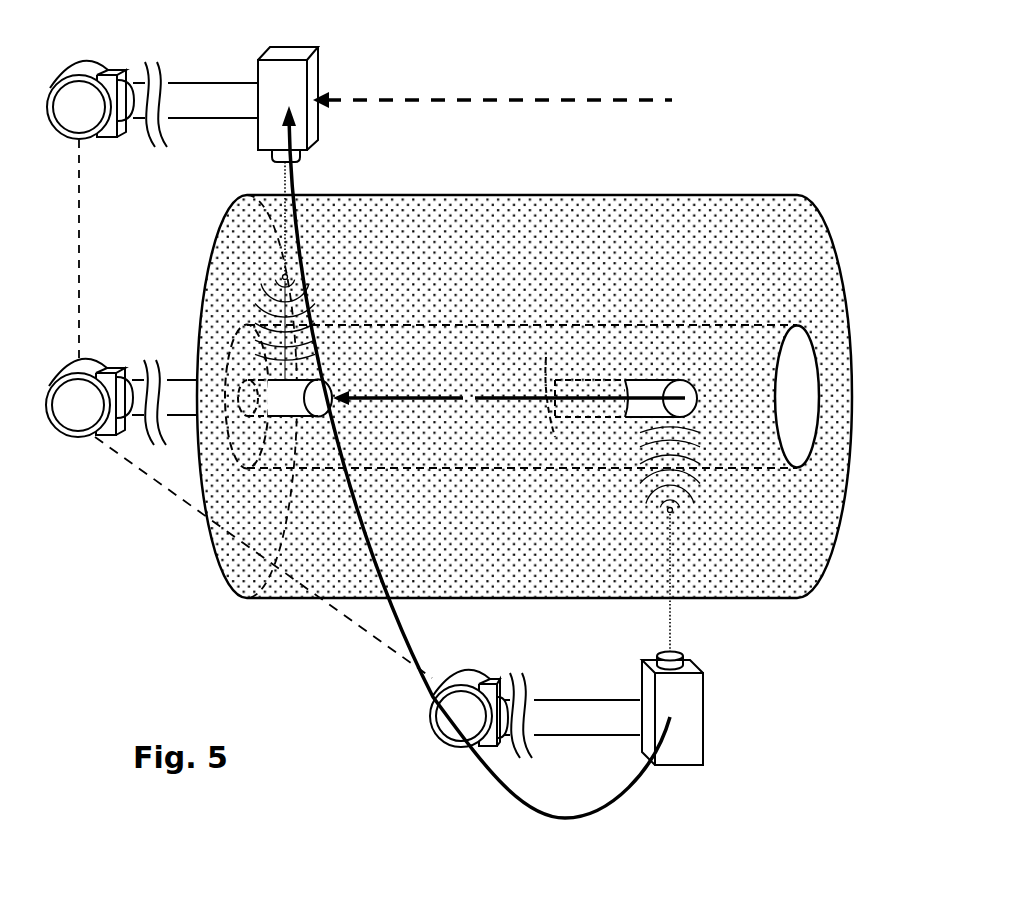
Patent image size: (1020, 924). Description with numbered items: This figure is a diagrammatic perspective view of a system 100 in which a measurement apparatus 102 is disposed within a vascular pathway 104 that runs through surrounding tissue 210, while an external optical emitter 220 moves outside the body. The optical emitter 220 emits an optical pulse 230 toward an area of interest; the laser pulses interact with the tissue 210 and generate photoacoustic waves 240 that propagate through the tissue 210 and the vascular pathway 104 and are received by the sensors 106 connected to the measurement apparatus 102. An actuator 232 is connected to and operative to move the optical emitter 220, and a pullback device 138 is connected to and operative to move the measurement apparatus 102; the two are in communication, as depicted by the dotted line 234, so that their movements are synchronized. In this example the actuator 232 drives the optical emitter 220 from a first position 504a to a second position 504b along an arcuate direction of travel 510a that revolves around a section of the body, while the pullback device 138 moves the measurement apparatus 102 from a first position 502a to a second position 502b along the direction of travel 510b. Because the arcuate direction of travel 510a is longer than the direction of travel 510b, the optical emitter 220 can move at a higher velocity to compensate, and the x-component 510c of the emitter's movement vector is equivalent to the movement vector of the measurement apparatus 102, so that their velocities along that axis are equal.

The system 100 is at (860, 170).
The measurement apparatus 102 is at (238, 438).
The vascular pathway 104 is at (822, 373).
The sensors 106 is at (333, 418).
The pullback device 138 is at (102, 362).
The tissue 210 is at (843, 285).
The optical emitter 220 is at (258, 70).
The optical pulse 230 is at (283, 185).
The actuator 232 is at (93, 64).
The dotted line 234 is at (80, 247).
The photoacoustic waves 240 is at (273, 292).
The first position 502a is at (668, 380).
The second position 502b is at (337, 380).
The first position 504a is at (703, 695).
The second position 504b is at (314, 90).
The arcuate direction of travel 510a is at (407, 640).
The direction of travel 510b is at (452, 398).
The x-component 510c is at (547, 100).